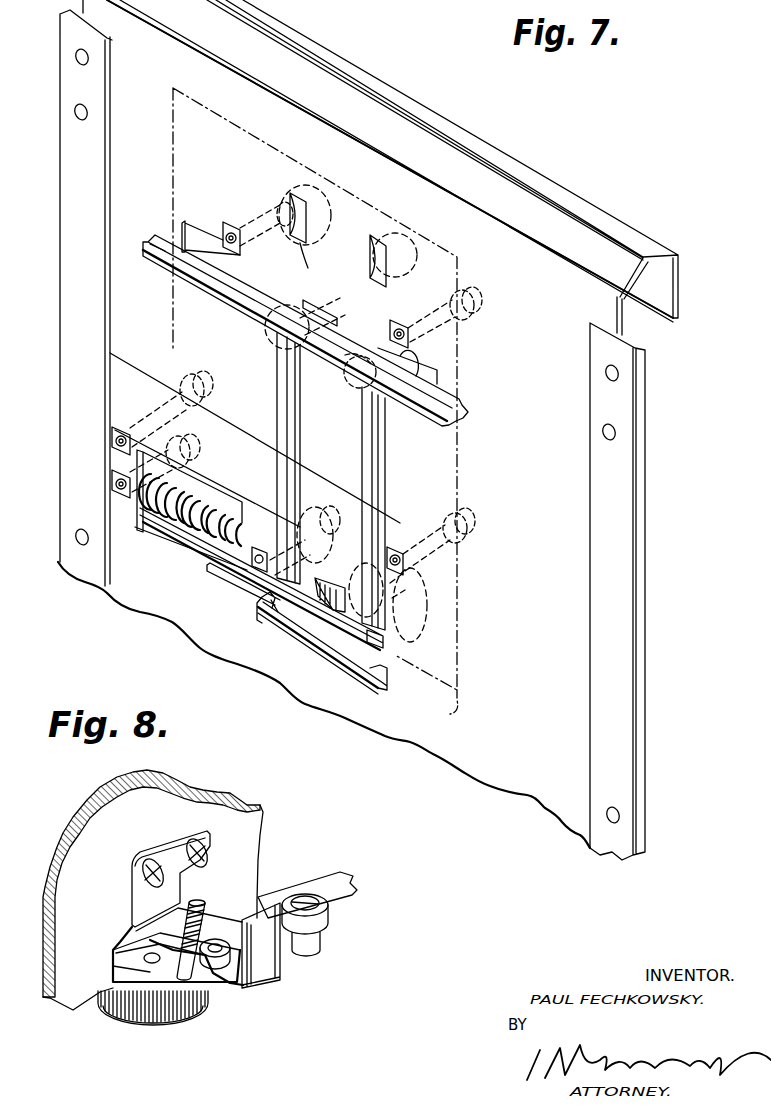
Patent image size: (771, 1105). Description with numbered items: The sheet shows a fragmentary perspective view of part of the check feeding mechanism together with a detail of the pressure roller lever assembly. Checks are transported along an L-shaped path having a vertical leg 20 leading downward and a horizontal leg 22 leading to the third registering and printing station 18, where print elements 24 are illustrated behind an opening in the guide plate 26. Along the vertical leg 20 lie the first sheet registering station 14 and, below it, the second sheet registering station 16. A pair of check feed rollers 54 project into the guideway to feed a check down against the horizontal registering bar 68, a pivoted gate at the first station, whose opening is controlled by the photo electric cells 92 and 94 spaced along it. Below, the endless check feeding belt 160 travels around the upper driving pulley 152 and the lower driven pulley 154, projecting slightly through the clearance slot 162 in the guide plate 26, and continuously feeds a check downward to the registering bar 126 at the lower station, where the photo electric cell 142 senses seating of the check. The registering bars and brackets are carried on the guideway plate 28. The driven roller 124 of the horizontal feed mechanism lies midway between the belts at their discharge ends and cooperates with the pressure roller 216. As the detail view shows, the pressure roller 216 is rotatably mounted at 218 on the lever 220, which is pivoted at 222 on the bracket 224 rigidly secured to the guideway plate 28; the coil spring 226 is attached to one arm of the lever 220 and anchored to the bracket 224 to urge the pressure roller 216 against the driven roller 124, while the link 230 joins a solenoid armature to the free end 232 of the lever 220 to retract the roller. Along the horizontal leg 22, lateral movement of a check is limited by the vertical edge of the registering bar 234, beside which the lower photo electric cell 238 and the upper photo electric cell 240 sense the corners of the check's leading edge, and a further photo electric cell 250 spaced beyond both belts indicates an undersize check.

In FIG. 7, the first sheet registering station 14 is at (458, 404).
In FIG. 7, the second sheet registering station 16 is at (345, 634).
In FIG. 7, the third sheet registering and printing station 18 is at (200, 556).
In FIG. 7, the vertical leg 20 is at (460, 457).
In FIG. 7, the horizontal leg 22 is at (454, 712).
In FIG. 7, the print elements 24 is at (197, 530).
In FIG. 7, the guide plate 26 is at (532, 624).
In FIG. 8, the guideway plate 28 is at (150, 820).
In FIG. 7, the check feed rollers 54 is at (366, 270).
In FIG. 7, the registering bar 68 is at (225, 286).
In FIG. 7, the photo electric cell 92 is at (267, 214).
In FIG. 7, the photo electric cell 94 is at (412, 313).
In FIG. 7, the driven roller 124 is at (338, 600).
In FIG. 7, the registering bar 126 is at (243, 578).
In FIG. 7, the photo electric cell 142 is at (270, 545).
In FIG. 7, the upper driving pulley 152 is at (262, 357).
In FIG. 7, the lower driven pulley 154 is at (332, 523).
In FIG. 7, the check feeding belt 160 is at (277, 396).
In FIG. 7, the clearance slot 162 is at (295, 475).
In FIG. 8, the pressure roller 216 is at (151, 1025).
In FIG. 8, the rotatable mounting of pressure roller 218 is at (146, 957).
In FIG. 8, the lever 220 is at (263, 985).
In FIG. 8, the pivot of lever 222 is at (217, 944).
In FIG. 8, the bracket 224 is at (140, 896).
In FIG. 8, the coil spring 226 is at (140, 932).
In FIG. 8, the link 230 is at (365, 898).
In FIG. 8, the free end of lever 232 is at (286, 955).
In FIG. 7, the stop or registering bar 234 is at (93, 564).
In FIG. 7, the lower photo electric cell 238 is at (203, 460).
In FIG. 7, the upper photo electric cell 240 is at (203, 373).
In FIG. 7, the photo electric cell 250 is at (470, 530).